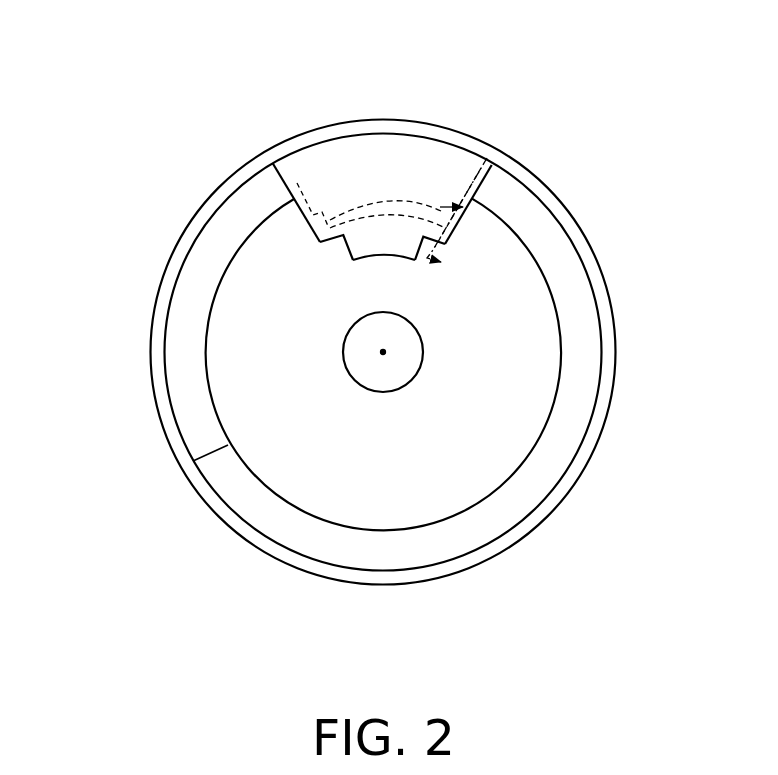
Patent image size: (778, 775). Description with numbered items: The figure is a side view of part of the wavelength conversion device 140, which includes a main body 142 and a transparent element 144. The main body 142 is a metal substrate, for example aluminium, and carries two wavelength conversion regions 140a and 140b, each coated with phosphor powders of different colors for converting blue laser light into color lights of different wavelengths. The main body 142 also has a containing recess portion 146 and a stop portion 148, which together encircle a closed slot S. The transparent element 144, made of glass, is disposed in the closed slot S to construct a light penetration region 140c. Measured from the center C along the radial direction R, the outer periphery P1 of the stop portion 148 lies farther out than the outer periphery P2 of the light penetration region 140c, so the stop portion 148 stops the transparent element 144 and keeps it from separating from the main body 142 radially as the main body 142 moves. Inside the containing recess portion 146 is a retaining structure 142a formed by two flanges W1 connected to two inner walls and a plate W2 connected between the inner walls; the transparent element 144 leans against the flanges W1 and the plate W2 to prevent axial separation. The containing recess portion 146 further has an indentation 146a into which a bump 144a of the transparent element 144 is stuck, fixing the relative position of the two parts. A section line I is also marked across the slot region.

The wavelength conversion device 140 is at (706, 644).
The wavelength conversion region 140a is at (573, 406).
The wavelength conversion region 140b is at (190, 367).
The light penetration region 140c is at (373, 178).
The main body 142 is at (468, 474).
The retaining structure 142a is at (100, 192).
The transparent element 144 is at (464, 173).
The bump 144a is at (397, 247).
The containing recess portion 146 is at (477, 234).
The indentation 146a is at (417, 263).
The stop portion 148 is at (442, 131).
The center C is at (383, 352).
The radial direction R is at (383, 352).
The closed slot S is at (312, 214).
The outer periphery P1 is at (307, 127).
The outer periphery P2 is at (293, 150).
The flange W1 is at (330, 221).
The plate W2 is at (374, 240).
The section line I- I is at (457, 219).